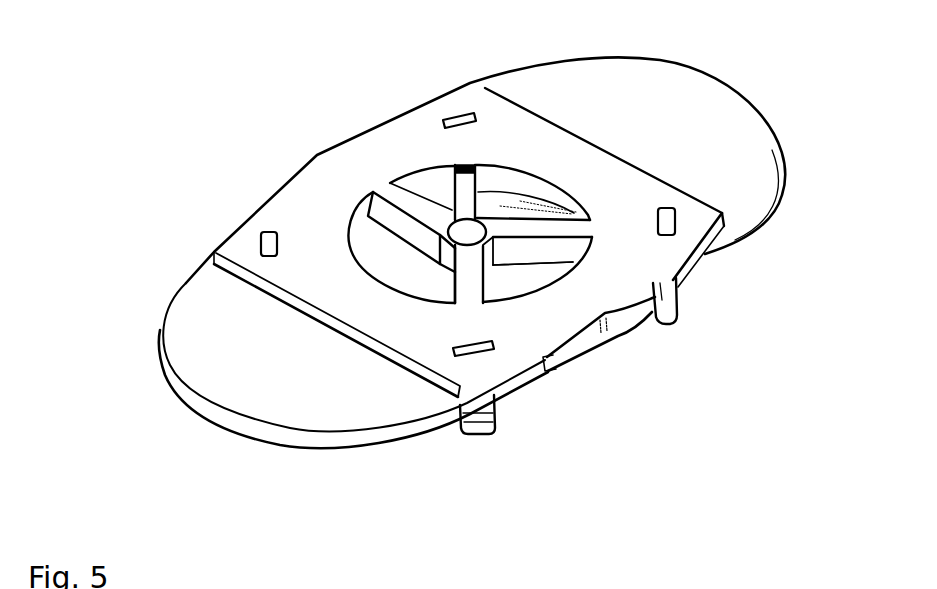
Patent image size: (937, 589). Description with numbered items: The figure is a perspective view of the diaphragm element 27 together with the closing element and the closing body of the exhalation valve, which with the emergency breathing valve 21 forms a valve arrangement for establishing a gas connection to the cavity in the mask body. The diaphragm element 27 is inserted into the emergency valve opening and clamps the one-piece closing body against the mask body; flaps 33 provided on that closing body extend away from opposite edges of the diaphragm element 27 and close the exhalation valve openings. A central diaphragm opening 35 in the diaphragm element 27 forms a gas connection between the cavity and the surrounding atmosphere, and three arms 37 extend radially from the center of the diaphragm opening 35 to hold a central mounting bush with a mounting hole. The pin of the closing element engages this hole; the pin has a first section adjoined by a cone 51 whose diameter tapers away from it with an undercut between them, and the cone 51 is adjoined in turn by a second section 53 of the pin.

The emergency breathing valve 21 is at (390, 255).
The diaphragm element 27 is at (313, 167).
The flaps 33 is at (637, 122).
The central diaphragm opening 35 is at (530, 275).
The arms 37 is at (390, 182).
The cone 51 is at (493, 252).
The second section 53 is at (468, 195).